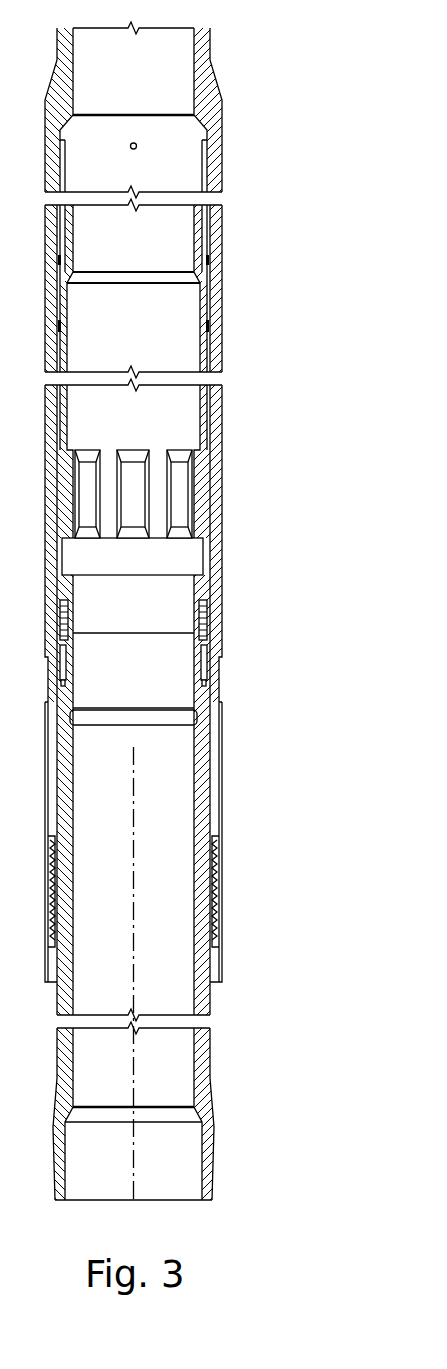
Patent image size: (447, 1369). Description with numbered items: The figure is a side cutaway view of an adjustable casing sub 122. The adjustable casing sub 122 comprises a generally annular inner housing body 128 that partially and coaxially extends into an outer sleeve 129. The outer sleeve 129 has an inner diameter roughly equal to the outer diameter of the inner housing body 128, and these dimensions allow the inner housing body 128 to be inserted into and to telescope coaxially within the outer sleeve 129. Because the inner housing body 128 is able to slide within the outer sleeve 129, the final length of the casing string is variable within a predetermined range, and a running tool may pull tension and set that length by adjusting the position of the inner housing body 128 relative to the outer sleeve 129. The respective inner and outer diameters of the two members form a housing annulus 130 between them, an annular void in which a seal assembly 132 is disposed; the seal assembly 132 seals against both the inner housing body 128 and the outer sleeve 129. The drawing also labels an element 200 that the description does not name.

The adjustable casing sub 122 is at (250, 278).
The inner housing body 128 is at (203, 992).
The outer sleeve 129 is at (203, 85).
The housing annulus 130 is at (203, 665).
The seal assembly 132 is at (210, 628).
The lugs / keys 200 is at (176, 455).